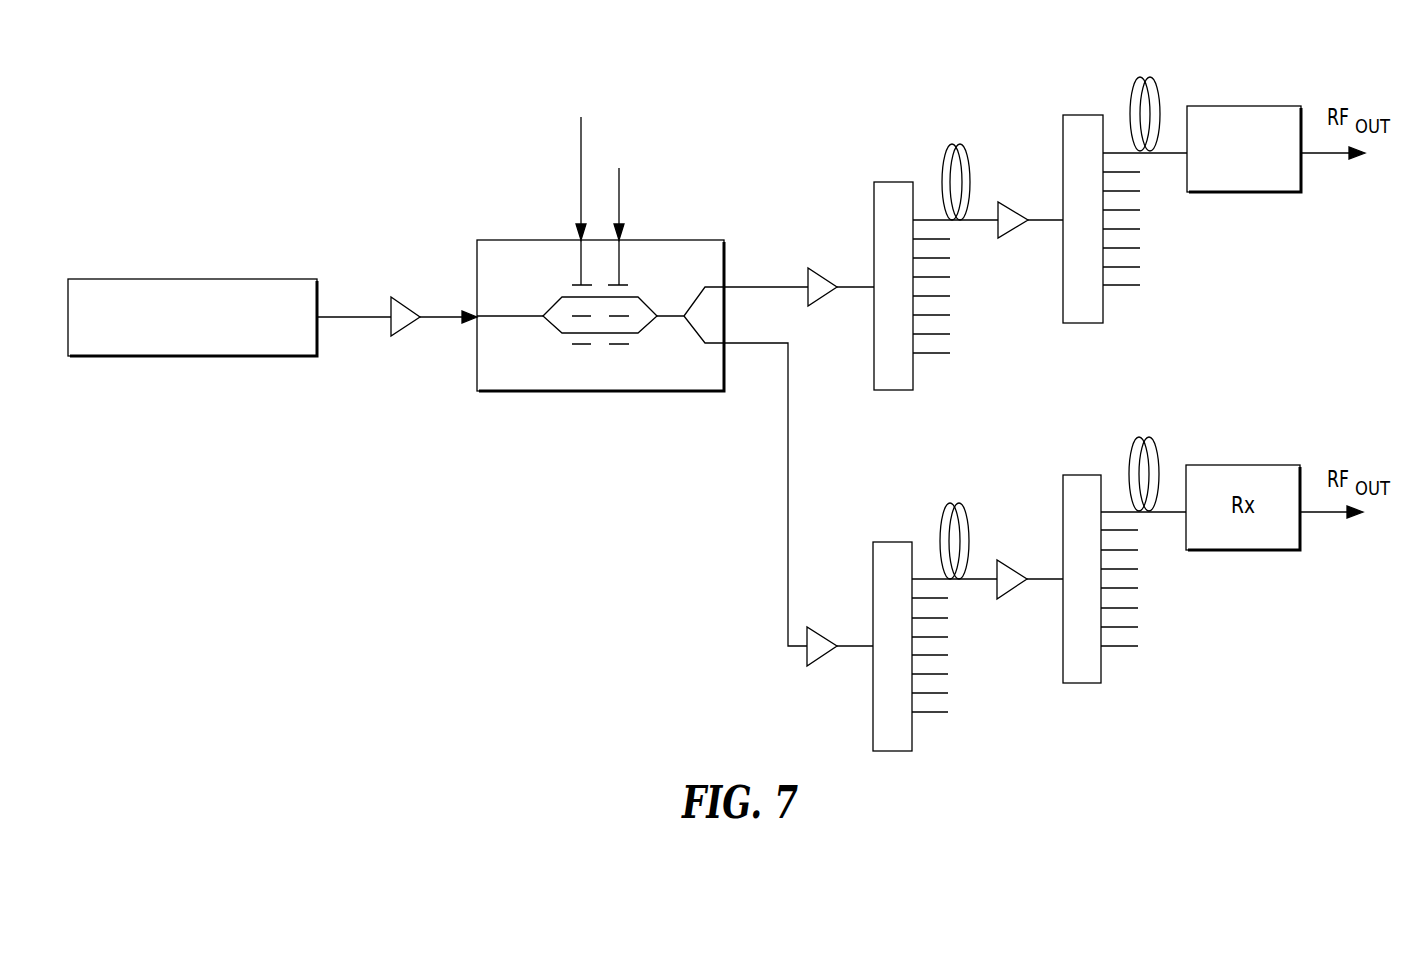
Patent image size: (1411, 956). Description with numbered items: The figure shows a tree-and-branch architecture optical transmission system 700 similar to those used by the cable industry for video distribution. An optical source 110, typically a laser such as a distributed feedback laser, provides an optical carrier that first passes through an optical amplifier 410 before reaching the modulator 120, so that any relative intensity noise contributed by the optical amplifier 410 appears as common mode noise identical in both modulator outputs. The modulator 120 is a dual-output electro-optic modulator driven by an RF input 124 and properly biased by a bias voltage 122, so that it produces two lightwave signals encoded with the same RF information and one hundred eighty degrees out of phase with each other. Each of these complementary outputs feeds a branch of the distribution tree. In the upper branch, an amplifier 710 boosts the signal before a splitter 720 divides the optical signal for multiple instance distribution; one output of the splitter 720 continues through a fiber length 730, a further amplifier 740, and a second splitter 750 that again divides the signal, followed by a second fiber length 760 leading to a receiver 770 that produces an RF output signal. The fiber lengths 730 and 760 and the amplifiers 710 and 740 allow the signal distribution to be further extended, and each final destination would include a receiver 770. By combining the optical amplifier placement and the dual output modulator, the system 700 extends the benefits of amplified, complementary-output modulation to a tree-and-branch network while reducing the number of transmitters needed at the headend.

The optical transmission system 700 is at (385, 192).
The optical source 110 is at (132, 279).
The optical amplifier 410 is at (401, 297).
The modulator 120 is at (477, 258).
The RF input 124 is at (581, 193).
The bias voltage 122 is at (619, 193).
The amplifier 710 is at (815, 268).
The splitter 720 is at (892, 182).
The fiber length 730 is at (950, 143).
The amplifier 740 is at (1005, 202).
The optical splitter 750 is at (1081, 115).
The fiber length 760 is at (1145, 77).
The receiver 770 is at (1243, 106).